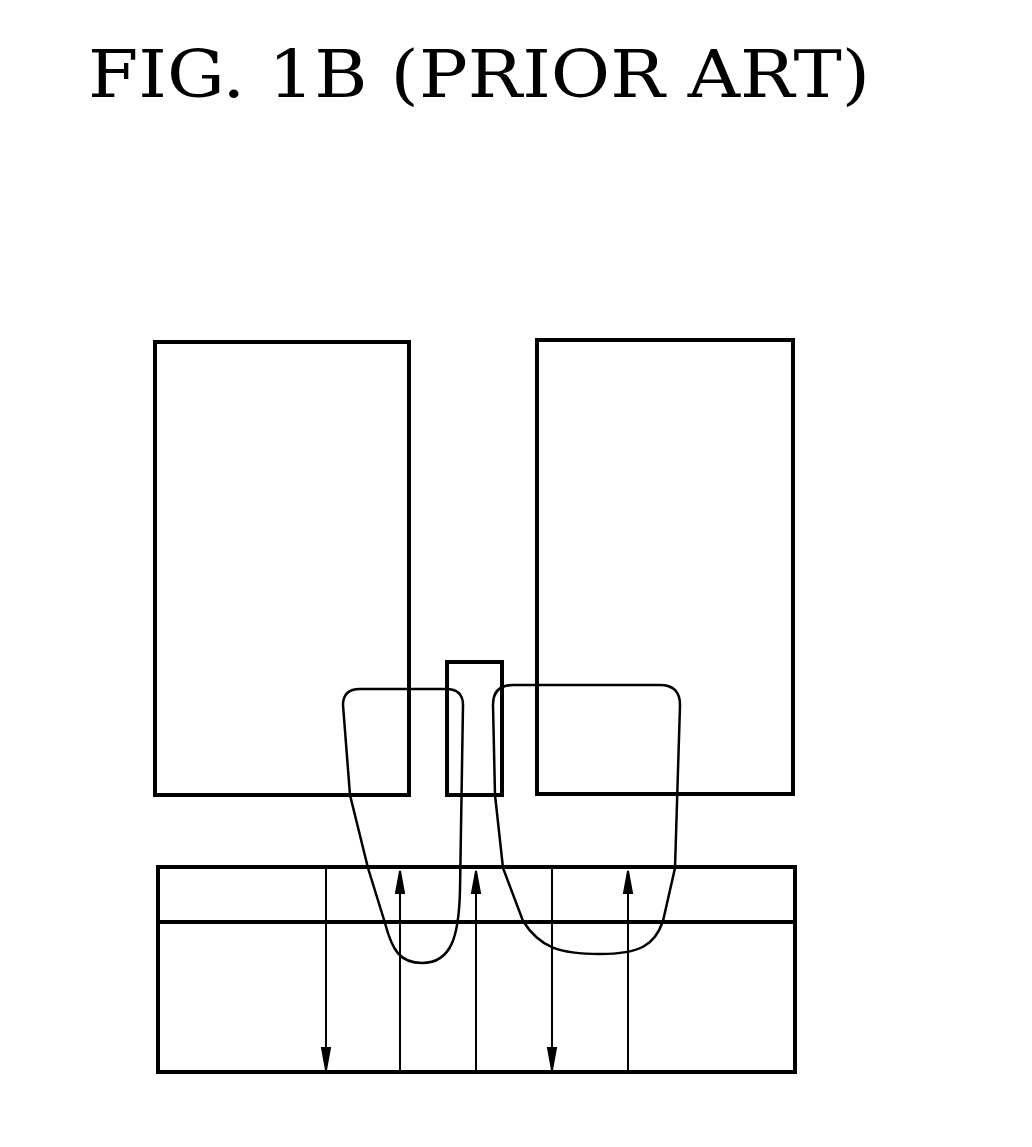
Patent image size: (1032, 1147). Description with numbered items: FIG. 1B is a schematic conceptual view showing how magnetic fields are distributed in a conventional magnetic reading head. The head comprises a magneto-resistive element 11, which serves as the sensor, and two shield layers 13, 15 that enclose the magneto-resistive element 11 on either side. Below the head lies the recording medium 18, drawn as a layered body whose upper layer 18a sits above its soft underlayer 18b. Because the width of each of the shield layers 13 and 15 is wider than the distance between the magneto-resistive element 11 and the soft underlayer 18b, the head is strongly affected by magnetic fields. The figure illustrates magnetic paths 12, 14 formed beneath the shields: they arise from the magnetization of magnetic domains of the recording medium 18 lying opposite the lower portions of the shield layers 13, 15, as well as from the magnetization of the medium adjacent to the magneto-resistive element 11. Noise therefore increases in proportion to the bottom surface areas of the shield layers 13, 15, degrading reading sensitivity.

The magneto-resistive element 11 is at (474, 672).
The source region 12 is at (352, 822).
The shield layer 13 is at (284, 358).
The drain region 14 is at (680, 830).
The shield layer 15 is at (662, 362).
The recording medium 18 is at (137, 961).
The upper substrate layer 18a is at (780, 897).
The soft underlayer 18b is at (780, 997).